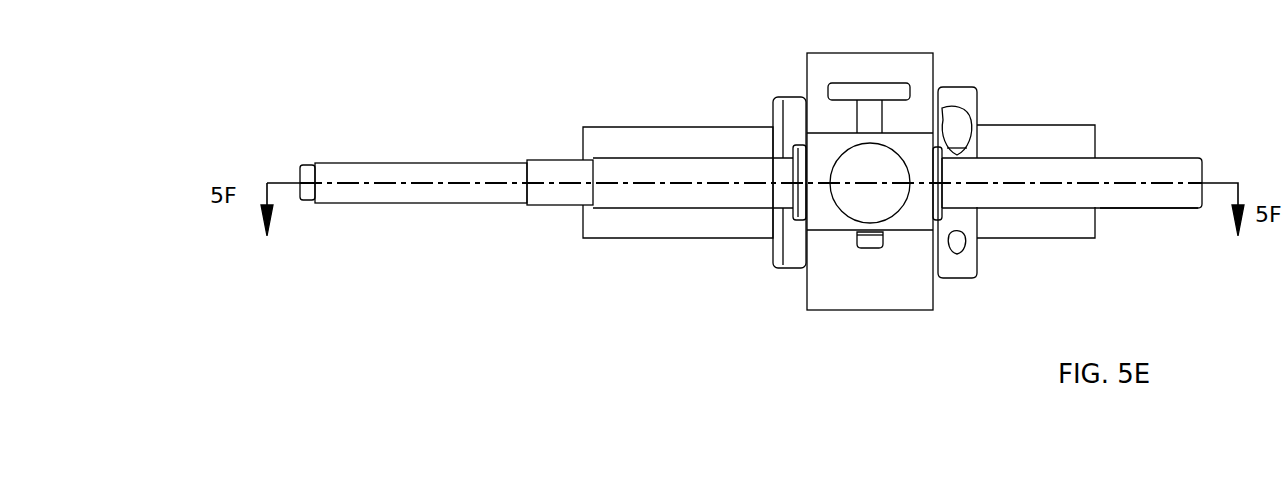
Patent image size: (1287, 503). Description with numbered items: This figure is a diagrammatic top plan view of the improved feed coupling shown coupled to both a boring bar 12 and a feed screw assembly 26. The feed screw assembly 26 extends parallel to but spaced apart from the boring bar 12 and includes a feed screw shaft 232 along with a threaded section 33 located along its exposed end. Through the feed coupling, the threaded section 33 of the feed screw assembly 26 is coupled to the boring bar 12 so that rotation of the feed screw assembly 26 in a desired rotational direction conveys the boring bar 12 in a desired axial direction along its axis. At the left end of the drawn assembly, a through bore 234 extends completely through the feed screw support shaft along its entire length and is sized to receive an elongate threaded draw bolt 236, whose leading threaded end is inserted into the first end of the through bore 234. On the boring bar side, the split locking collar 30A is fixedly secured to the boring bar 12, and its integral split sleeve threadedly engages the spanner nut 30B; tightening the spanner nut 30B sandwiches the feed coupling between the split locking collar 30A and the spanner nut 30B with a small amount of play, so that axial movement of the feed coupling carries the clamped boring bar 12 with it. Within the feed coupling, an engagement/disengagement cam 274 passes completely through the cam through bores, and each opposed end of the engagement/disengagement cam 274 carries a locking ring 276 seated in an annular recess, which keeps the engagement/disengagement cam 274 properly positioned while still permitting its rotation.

The threaded draw bolt 236 is at (302, 167).
The through bore 234 is at (490, 163).
The spanner nut 30B is at (783, 97).
The engagement/disengagement cam 274 is at (857, 85).
The locking ring 276 is at (887, 131).
The split locking collar 30A is at (977, 95).
The boring bar 12 is at (1076, 132).
The threaded section 33 is at (1133, 159).
The feed screw assembly 26 is at (1190, 157).
The feed screw shaft 232 is at (1145, 212).